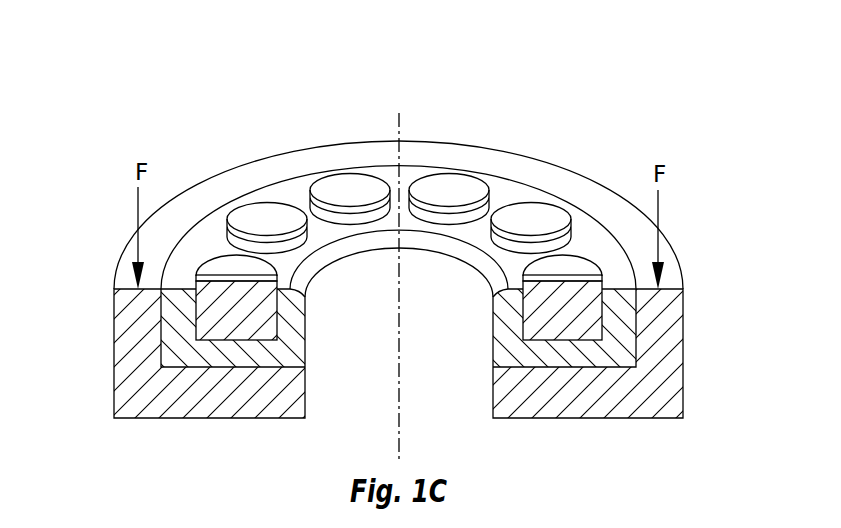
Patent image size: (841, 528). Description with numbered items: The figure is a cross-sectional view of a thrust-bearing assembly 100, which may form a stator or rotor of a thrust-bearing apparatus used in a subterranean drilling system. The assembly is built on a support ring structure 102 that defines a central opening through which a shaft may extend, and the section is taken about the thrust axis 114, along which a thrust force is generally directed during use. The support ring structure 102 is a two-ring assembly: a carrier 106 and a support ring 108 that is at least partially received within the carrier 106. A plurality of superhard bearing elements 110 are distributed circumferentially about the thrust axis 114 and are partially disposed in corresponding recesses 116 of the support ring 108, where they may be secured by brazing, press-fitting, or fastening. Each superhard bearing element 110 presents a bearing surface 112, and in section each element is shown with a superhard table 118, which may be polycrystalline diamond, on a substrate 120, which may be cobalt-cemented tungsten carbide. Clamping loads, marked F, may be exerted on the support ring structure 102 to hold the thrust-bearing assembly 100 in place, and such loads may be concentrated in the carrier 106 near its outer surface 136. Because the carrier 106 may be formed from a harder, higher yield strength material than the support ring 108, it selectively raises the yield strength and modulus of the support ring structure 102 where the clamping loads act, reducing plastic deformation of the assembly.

The thrust-bearing assembly 100 is at (108, 66).
The support ring structure 102 is at (100, 392).
The carrier 106 is at (132, 322).
The support ring 108 is at (628, 352).
The superhard bearing elements 110 is at (242, 255).
The bearing surface 112 is at (218, 276).
The thrust axis 114 is at (399, 118).
The recesses 116 is at (252, 362).
The superhard table 118 is at (197, 276).
The substrate 120 is at (220, 320).
The outer surface 136 is at (683, 302).